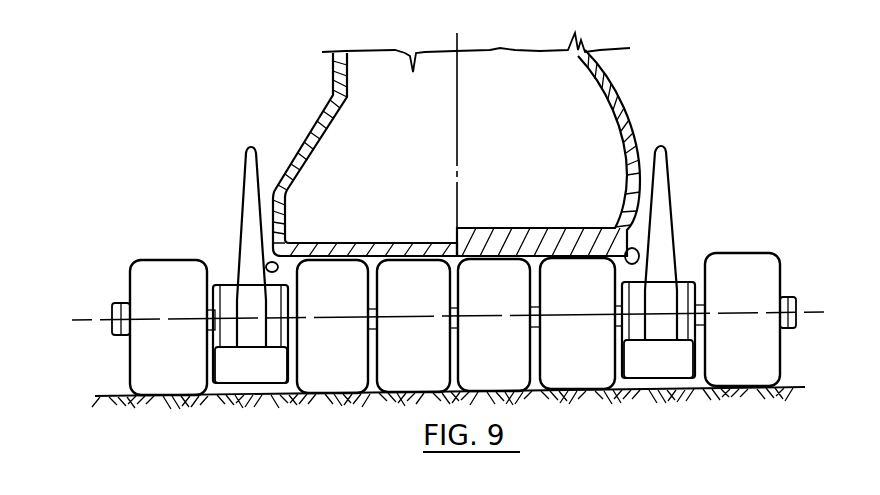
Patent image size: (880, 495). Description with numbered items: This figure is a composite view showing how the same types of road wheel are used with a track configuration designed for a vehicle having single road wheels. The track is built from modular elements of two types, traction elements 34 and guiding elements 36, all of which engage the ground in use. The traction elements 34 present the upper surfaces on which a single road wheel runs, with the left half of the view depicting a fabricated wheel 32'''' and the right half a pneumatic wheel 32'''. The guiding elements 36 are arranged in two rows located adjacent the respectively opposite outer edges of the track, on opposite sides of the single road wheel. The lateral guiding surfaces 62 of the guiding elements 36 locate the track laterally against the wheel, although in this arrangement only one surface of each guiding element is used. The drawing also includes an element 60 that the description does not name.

The fabricated wheel 32'''' is at (363, 154).
The pneumatic wheel 32''' is at (595, 153).
The traction elements 34 is at (455, 324).
The guiding elements 36 is at (252, 392).
The tapered guide blade 60 is at (249, 189).
The lateral guiding surfaces 62 is at (266, 266).